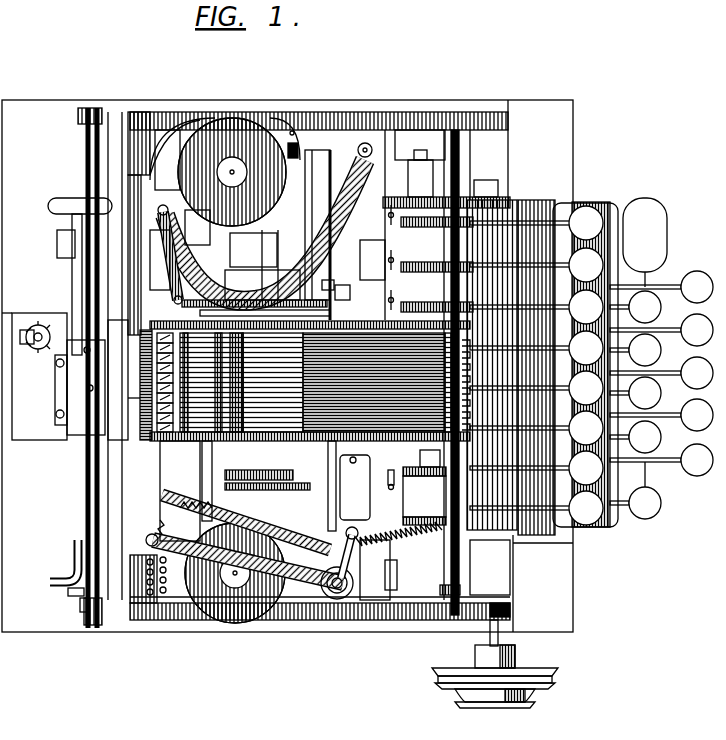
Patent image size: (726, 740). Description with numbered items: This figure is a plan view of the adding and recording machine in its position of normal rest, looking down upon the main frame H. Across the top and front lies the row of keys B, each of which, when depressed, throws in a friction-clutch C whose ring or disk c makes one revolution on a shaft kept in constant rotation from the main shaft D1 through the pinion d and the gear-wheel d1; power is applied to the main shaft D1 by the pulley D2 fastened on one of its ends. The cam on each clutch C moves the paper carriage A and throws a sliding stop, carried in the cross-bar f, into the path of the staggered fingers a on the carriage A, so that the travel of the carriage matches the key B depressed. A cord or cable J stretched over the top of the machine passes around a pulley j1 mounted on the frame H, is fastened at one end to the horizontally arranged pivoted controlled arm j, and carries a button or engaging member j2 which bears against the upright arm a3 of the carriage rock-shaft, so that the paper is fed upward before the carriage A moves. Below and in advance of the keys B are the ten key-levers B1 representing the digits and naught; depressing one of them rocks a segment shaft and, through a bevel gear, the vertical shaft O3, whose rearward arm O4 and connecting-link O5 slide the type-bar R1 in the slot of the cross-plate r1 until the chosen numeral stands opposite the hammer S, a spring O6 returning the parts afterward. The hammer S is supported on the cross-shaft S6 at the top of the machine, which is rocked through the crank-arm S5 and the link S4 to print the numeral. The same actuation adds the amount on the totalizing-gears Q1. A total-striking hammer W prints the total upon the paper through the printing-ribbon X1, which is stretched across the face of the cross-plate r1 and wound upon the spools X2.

The main frame H is at (444, 112).
The spools X2 is at (226, 120).
The printing-ribbon X1 is at (188, 125).
The cord or cable J is at (322, 498).
The pulley j1 is at (358, 150).
The button or engaging member j2 is at (347, 292).
The upright arm a3 is at (317, 280).
The gear-wheel d1 is at (446, 179).
The pinion d is at (480, 186).
The ring or disk c is at (430, 305).
The fingers a is at (385, 258).
The totalizing-gears Q1 is at (140, 360).
The sliding type-bar R1 is at (118, 380).
The connecting-link O5 is at (140, 430).
The cross-plate r1 is at (125, 400).
The hammer S is at (34, 376).
The total-striking hammer W is at (80, 387).
The cross-shaft S6 is at (86, 533).
The link S4 is at (68, 592).
The crank-arm S5 is at (80, 605).
The pivoted controlled arm j is at (300, 525).
The arm O4 is at (249, 567).
The carriage A is at (362, 490).
The friction-clutch C is at (428, 540).
The cross-bar f is at (389, 487).
The vertical shaft O3 is at (396, 577).
The spring O6 is at (436, 593).
The main shaft D1 is at (488, 636).
The pulley D2 is at (560, 655).
The keys B is at (586, 208).
The key-levers B1 is at (690, 272).